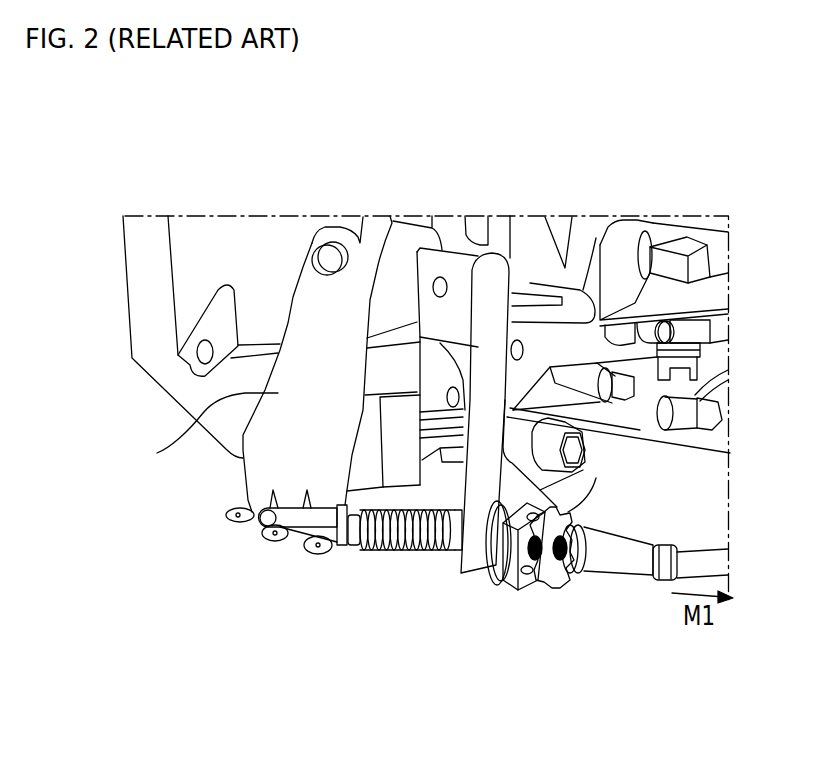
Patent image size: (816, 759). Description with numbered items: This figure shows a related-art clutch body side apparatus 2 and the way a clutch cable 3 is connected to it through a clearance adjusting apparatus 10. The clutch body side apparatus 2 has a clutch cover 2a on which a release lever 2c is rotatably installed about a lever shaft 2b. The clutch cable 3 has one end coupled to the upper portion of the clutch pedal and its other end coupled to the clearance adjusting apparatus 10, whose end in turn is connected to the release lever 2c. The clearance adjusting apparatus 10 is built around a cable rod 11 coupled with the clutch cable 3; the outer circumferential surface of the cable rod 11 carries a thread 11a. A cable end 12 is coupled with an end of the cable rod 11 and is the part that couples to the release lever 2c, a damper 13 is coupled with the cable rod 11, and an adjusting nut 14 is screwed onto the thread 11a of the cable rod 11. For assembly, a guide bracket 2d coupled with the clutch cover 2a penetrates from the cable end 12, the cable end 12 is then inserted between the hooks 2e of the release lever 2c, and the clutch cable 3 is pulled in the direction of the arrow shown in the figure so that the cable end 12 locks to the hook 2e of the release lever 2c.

The clutch body side apparatus 2 is at (200, 212).
The clutch cover 2a is at (145, 263).
The lever shaft 2b is at (324, 262).
The release lever 2c is at (157, 453).
The guide bracket 2d is at (478, 590).
The hooks 2e is at (228, 515).
The clutch cable 3 is at (693, 563).
The clearance adjusting apparatus 10 is at (402, 568).
The cable rod 11 is at (372, 548).
The thread 11a is at (523, 568).
The cable end 12 is at (302, 523).
The damper 13 is at (495, 560).
The adjusting nut 14 is at (570, 517).